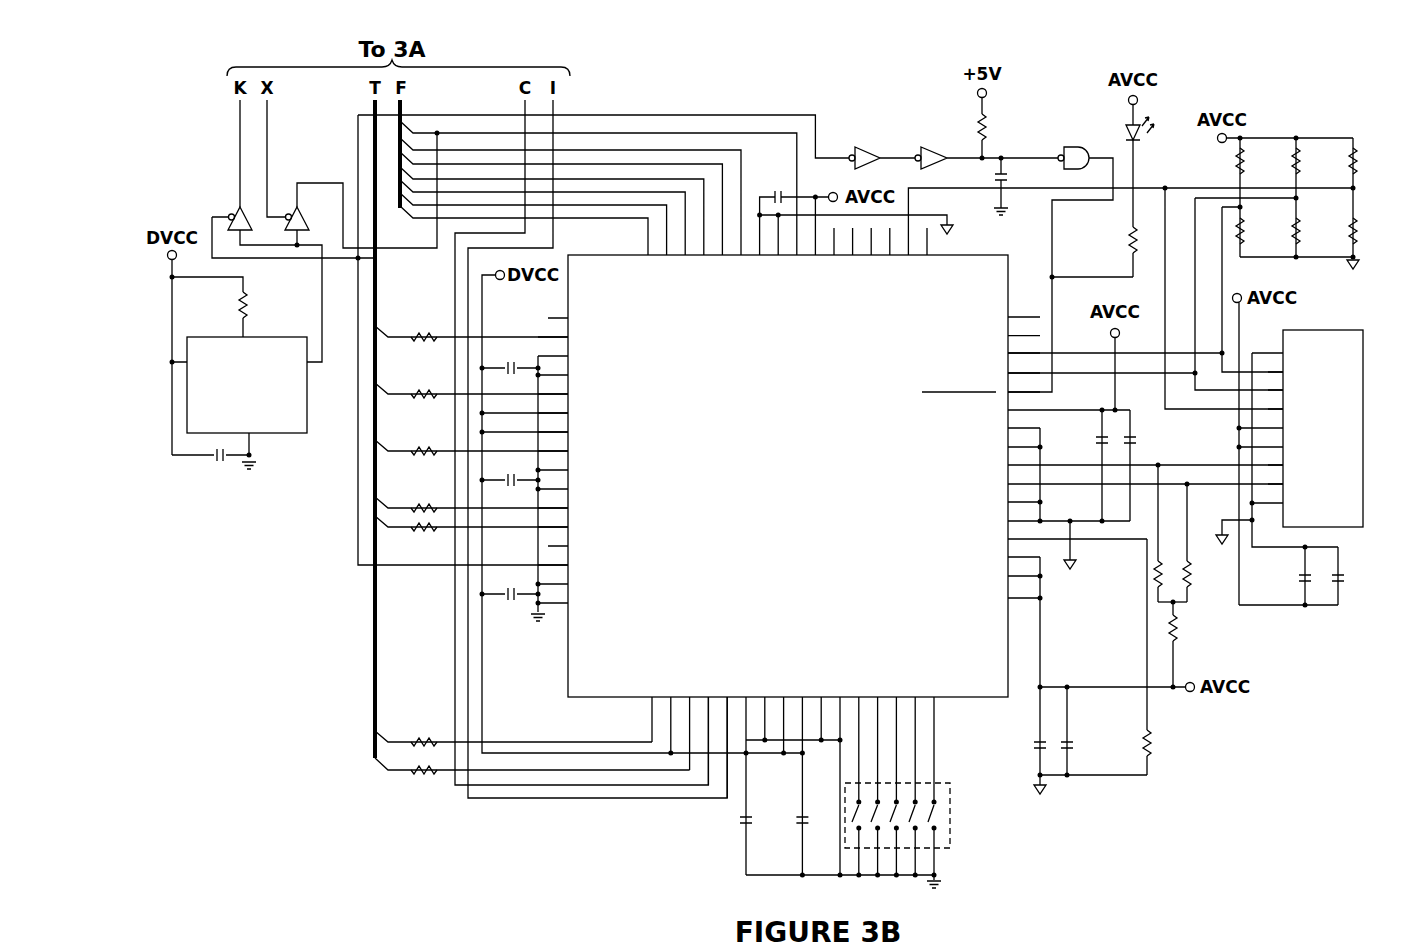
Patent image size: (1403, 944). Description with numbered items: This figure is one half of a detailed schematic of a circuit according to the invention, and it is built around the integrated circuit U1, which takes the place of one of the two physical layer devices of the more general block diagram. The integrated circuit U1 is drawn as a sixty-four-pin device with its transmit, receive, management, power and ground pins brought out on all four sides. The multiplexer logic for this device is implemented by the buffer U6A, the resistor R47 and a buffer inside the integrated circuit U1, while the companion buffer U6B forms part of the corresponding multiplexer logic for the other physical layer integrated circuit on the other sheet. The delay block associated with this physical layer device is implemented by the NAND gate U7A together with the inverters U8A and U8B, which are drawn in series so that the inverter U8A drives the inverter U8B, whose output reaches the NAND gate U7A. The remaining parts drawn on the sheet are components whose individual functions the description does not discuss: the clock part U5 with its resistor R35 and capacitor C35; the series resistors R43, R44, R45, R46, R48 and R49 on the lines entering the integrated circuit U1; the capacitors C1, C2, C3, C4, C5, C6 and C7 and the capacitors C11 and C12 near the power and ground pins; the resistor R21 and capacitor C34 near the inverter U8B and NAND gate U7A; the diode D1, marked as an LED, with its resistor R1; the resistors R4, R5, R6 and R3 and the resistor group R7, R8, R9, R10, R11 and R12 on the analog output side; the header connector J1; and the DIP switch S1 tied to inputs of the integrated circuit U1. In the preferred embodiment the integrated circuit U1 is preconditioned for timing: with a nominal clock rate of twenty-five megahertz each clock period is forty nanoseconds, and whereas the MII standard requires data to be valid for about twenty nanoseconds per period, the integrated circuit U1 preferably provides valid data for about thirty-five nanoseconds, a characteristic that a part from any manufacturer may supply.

The integrated circuit U1 is at (789, 551).
The 25 MHz oscillator U5 is at (247, 385).
The buffer U6A is at (226, 208).
The buffer U6B is at (307, 208).
The NAND gate U7A is at (1061, 242).
The inverter U8A is at (875, 132).
The inverter U8B is at (980, 132).
The 2k ohm resistor R1 is at (1114, 242).
The 13.25k ohm resistor R3 is at (1191, 657).
The 62 ohm resistor R4 is at (1133, 533).
The 62 ohm resistor R5 is at (1209, 543).
The 100 ohm resistor R6 is at (1202, 644).
The 82 ohm resistor R7 is at (1258, 161).
The 82 ohm resistor R8 is at (1314, 161).
The 82 ohm resistor R9 is at (1371, 161).
The 130 ohm resistor R10 is at (1263, 231).
The 130 ohm resistor R11 is at (1319, 231).
The 130 ohm resistor R12 is at (1376, 231).
The 100k ohm resistor R21 is at (1017, 123).
The 10k ohm resistor R35 is at (271, 303).
The 50 ohm resistor R43 is at (471, 316).
The 50 ohm resistor R44 is at (471, 373).
The 50 ohm resistor R45 is at (471, 430).
The 50 ohm resistor R46 is at (471, 487).
The resistor R47 is at (471, 550).
The 50 ohm resistor R48 is at (513, 721).
The 50 ohm resistor R49 is at (532, 787).
The 0.1 uF capacitor C1 is at (510, 347).
The 0.1 uF capacitor C2 is at (510, 459).
The 0.1 uF capacitor C3 is at (510, 573).
The 0.1 uF capacitor C4 is at (720, 828).
The 0.1 uF capacitor C5 is at (778, 798).
The 0.1 uF capacitor C6 is at (1074, 438).
The 0.1 uF capacitor C7 is at (966, 332).
The 0.1 uF capacitor C11 is at (1159, 657).
The 0.1 uF capacitor C12 is at (1232, 661).
The 10 uF capacitor C34 is at (978, 186).
The capacitor C35 is at (213, 469).
The LED D1 is at (1161, 130).
The header connector J1 is at (1301, 407).
The DIP-5 switch S1 is at (928, 823).